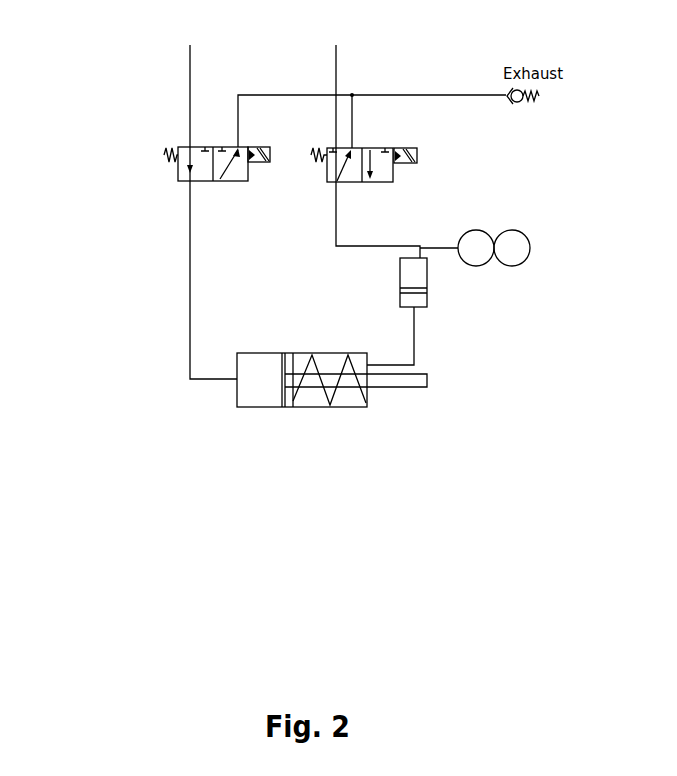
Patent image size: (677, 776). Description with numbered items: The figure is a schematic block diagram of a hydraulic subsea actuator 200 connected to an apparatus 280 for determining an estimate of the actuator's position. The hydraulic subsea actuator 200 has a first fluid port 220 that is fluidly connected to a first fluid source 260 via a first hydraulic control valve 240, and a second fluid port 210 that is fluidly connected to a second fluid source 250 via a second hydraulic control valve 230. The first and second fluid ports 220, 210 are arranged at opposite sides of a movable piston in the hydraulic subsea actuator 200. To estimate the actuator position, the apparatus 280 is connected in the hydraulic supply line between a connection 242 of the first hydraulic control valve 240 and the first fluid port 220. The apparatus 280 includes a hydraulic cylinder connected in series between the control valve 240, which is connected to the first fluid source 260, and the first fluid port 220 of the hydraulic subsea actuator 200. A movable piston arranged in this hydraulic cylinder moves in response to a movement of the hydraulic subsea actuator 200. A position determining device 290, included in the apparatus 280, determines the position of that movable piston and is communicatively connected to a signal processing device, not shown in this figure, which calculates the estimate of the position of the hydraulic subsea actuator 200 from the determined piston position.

The hydraulic subsea actuator 200 is at (332, 436).
The second fluid port 210 is at (192, 357).
The first fluid port 220 is at (367, 365).
The second hydraulic control valve 230 is at (167, 160).
The first hydraulic control valve 240 is at (385, 177).
The connection of the first hydraulic control valve 242 is at (333, 232).
The second fluid source 250 is at (190, 92).
The first fluid source 260 is at (335, 70).
The apparatus for determining an estimate of the position 280 is at (418, 297).
The position determining device 290 is at (532, 233).